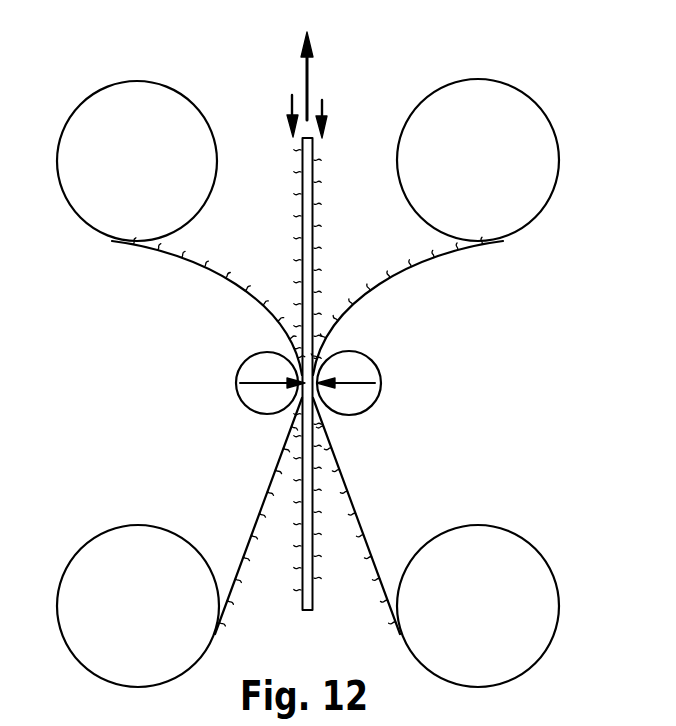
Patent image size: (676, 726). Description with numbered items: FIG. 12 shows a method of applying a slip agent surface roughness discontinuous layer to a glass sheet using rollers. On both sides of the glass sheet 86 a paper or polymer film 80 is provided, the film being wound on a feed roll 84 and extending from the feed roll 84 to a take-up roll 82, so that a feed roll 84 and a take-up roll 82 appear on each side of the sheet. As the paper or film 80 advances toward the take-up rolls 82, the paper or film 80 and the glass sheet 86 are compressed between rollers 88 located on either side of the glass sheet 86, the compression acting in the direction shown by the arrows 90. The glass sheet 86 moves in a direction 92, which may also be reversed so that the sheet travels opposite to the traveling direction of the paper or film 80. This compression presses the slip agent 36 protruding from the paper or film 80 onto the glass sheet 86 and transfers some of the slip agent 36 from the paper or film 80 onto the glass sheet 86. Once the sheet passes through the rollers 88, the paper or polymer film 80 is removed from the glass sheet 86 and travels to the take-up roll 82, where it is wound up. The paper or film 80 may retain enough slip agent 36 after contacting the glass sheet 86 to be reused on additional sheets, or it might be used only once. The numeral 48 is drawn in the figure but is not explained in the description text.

The slip agent 36 is at (300, 232).
The air flow 48 is at (292, 96).
The paper or polymer film 80 is at (258, 527).
The take-up roll 82 is at (123, 138).
The feed roll 84 is at (112, 560).
The glass sheet 86 is at (310, 452).
The rollers 88 is at (350, 363).
The arrows 90 is at (240, 383).
The direction 92 is at (312, 65).